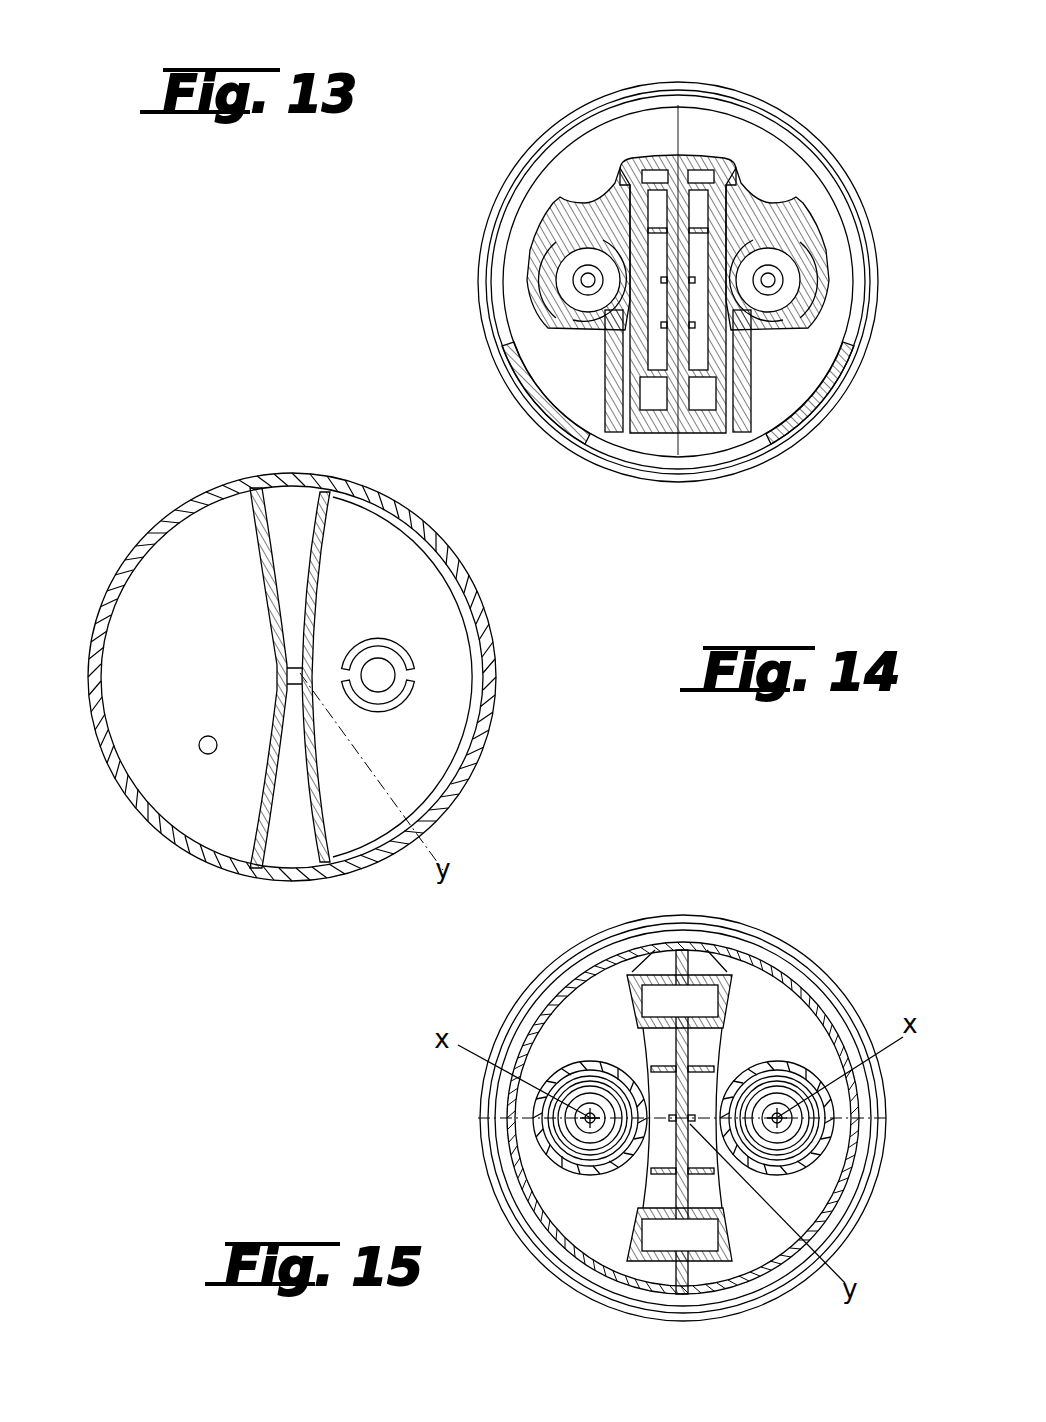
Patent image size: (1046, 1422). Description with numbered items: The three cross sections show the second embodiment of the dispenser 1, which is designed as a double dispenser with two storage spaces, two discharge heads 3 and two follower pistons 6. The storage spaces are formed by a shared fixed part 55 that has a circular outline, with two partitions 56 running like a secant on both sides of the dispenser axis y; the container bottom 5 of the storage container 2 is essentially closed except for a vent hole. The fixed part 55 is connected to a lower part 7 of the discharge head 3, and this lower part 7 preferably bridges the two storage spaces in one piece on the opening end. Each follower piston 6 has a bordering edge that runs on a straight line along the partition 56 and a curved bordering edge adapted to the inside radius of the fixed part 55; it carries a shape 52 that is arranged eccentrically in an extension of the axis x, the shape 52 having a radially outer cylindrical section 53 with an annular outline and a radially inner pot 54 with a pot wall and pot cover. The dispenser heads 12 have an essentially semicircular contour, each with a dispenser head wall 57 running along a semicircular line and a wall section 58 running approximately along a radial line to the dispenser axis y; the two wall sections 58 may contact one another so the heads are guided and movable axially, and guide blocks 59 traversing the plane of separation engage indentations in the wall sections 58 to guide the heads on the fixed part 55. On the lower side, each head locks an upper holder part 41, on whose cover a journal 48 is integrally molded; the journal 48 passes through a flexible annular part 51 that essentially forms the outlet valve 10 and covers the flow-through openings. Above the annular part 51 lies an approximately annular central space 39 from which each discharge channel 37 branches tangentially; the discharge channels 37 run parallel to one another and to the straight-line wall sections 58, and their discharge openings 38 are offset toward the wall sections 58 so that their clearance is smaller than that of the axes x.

In FIG. 13, the dispenser 1 is at (786, 78).
In FIG. 14, the dispenser 1 is at (247, 460).
In FIG. 15, the dispenser 1 is at (746, 880).
In FIG. 13, the storage container 2 is at (858, 362).
In FIG. 14, the storage container 2 is at (338, 478).
In FIG. 15, the storage container 2 is at (849, 991).
In FIG. 13, the discharge head 3 is at (800, 100).
In FIG. 14, the container bottom 5 is at (178, 612).
In FIG. 14, the follower piston 6 is at (446, 667).
In FIG. 15, the lower part 7 is at (612, 1230).
In FIG. 13, the outlet valve 10 is at (553, 275).
In FIG. 13, the dispenser head 12 is at (602, 150).
In FIG. 15, the dispenser head 12 is at (543, 1012).
In FIG. 13, the discharge channel 37 is at (616, 411).
In FIG. 13, the discharge opening 38 is at (615, 412).
In FIG. 13, the central space 39 is at (585, 276).
In FIG. 15, the holder part 41 is at (564, 1170).
In FIG. 13, the journal 48 is at (592, 283).
In FIG. 13, the annular part 51 is at (570, 300).
In FIG. 14, the shape 52 is at (405, 636).
In FIG. 14, the cylindrical section 53 is at (398, 704).
In FIG. 14, the pot 54 is at (385, 677).
In FIG. 14, the fixed part 55 is at (144, 808).
In FIG. 14, the partition 56 is at (270, 598).
In FIG. 13, the dispenser head wall 57 is at (548, 352).
In FIG. 15, the dispenser head wall 57 is at (516, 1166).
In FIG. 13, the wall section 58 is at (682, 220).
In FIG. 15, the wall section 58 is at (673, 1049).
In FIG. 15, the guide block 59 is at (704, 1002).